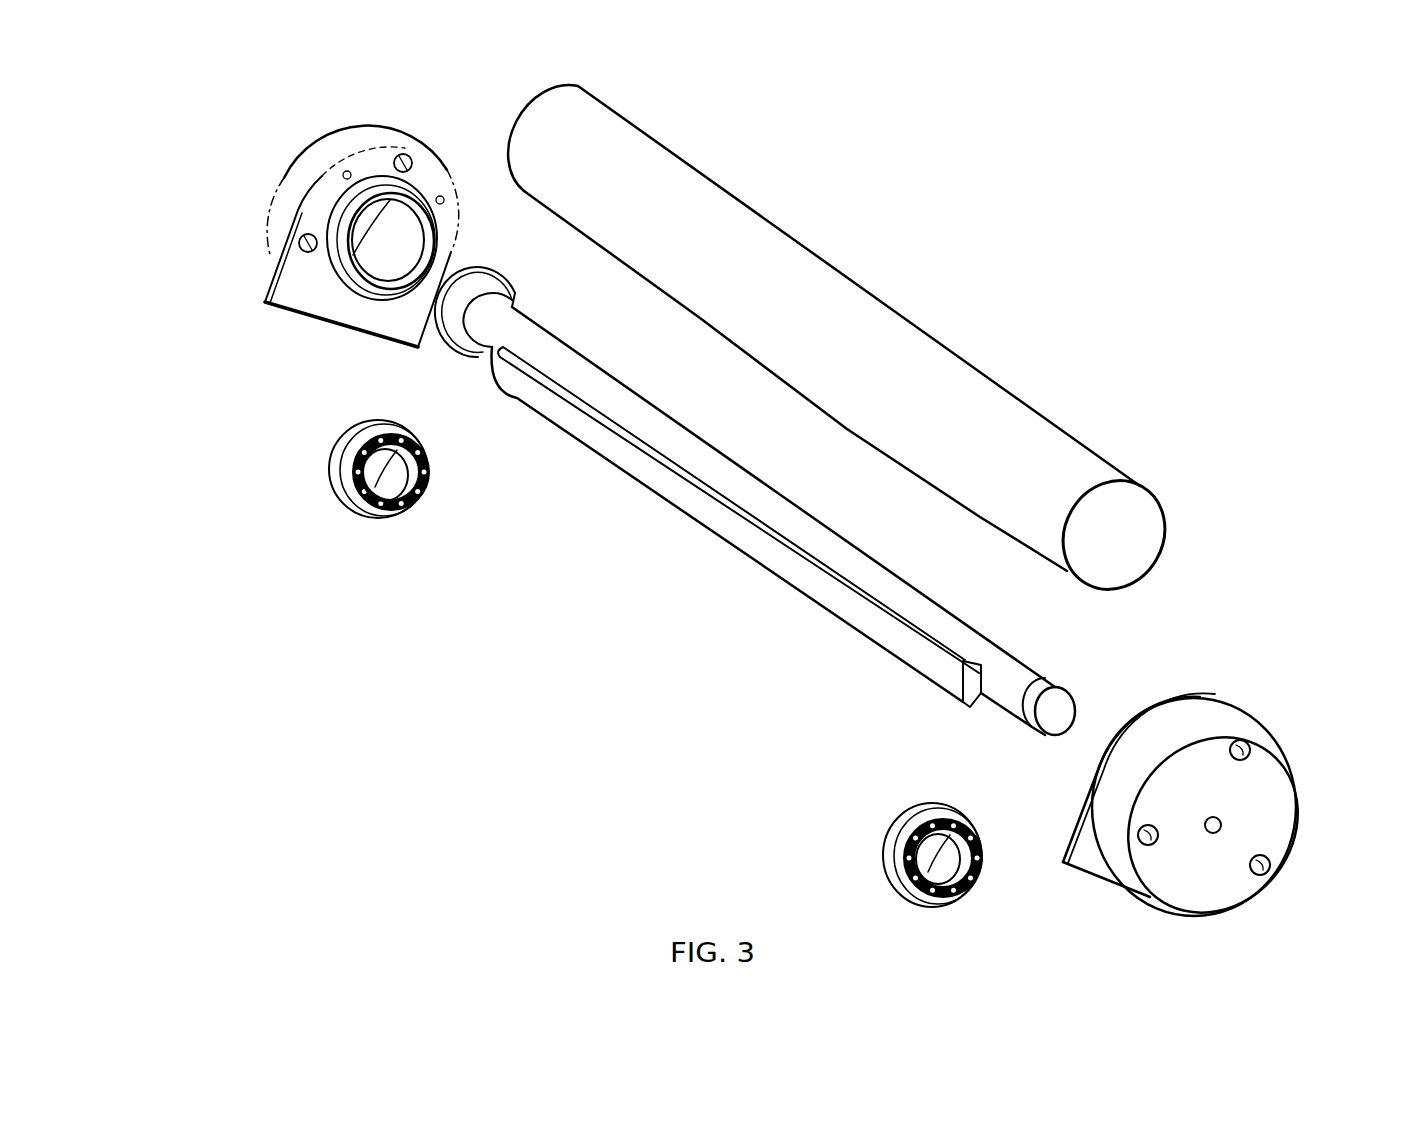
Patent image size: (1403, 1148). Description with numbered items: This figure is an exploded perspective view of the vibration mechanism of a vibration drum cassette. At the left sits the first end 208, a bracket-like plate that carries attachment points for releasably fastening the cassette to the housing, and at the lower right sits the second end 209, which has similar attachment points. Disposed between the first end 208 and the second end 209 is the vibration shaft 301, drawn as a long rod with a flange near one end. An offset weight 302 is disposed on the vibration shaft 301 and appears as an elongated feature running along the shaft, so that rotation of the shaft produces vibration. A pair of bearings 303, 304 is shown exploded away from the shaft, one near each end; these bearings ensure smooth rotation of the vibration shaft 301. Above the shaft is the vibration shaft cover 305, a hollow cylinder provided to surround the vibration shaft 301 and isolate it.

The first end 208 is at (356, 140).
The second end 209 is at (1228, 722).
The vibration shaft 301 is at (1012, 670).
The offset weight 302 is at (906, 648).
The bearing 303 is at (968, 887).
The bearing 304 is at (425, 470).
The vibration shaft cover 305 is at (925, 347).